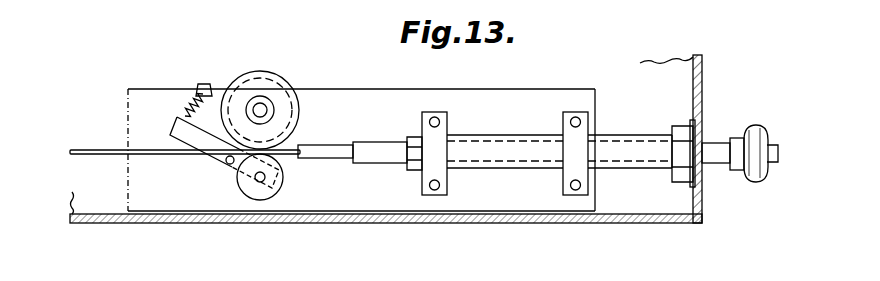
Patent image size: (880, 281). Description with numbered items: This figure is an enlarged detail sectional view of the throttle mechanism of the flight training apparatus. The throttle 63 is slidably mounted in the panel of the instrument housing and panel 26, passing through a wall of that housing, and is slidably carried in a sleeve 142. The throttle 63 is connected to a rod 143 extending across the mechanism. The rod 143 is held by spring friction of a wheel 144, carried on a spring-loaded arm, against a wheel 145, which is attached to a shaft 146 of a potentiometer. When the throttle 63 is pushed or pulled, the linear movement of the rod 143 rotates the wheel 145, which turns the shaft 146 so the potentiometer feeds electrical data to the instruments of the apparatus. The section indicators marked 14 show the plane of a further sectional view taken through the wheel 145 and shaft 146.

The section line of FIG. 14 is at (207, 42).
The instrument housing and panel 26 is at (704, 70).
The throttle 63 is at (760, 126).
The sleeve 142 is at (500, 142).
The rod 143 is at (101, 149).
The wheel 144 is at (280, 187).
The wheel 145 is at (285, 118).
The shaft 146 is at (267, 105).